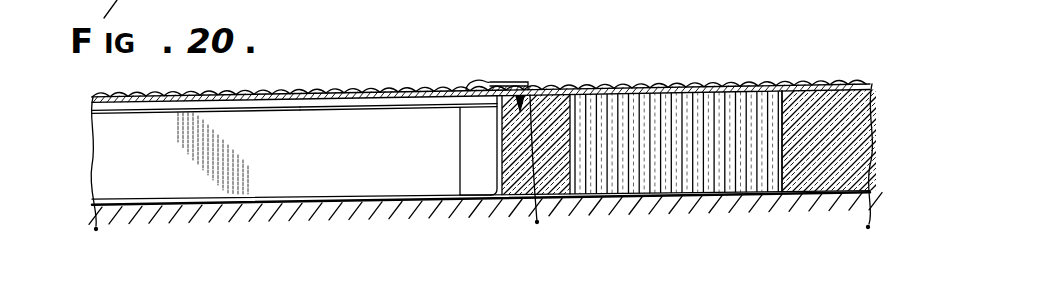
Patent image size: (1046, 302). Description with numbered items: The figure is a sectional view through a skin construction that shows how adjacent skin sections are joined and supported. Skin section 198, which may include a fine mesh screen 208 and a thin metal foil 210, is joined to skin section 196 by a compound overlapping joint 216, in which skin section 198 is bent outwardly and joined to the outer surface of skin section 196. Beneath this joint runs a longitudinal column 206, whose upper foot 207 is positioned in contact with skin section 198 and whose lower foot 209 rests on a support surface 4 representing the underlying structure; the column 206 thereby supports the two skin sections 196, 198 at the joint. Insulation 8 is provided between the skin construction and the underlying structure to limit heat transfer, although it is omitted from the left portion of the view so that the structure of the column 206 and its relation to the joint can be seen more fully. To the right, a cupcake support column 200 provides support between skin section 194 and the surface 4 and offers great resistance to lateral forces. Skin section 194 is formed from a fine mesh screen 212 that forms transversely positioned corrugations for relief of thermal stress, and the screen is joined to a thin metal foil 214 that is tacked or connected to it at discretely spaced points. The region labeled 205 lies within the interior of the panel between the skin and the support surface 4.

The support surface 4 is at (282, 203).
The insulation 8 is at (848, 157).
The skin section 194 is at (519, 64).
The skin section 196 is at (522, 110).
The skin section 198 is at (295, 78).
The cupcake support column 200 is at (662, 177).
The panel 205 is at (132, 182).
The longitudinal column 206 is at (500, 150).
The upper foot 207 is at (470, 107).
The fine mesh screen 208 is at (372, 92).
The lower foot 209 is at (468, 192).
The thin metal foil 210 is at (120, 113).
The fine mesh screen 212 is at (698, 85).
The thin metal foil 214 is at (822, 92).
The compound overlapping joint 216 is at (481, 81).